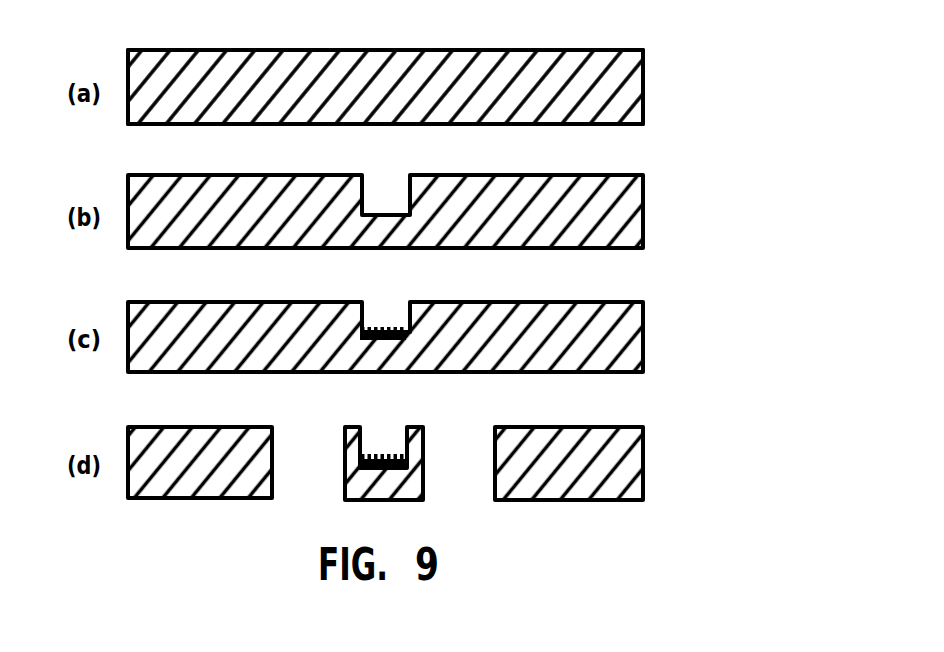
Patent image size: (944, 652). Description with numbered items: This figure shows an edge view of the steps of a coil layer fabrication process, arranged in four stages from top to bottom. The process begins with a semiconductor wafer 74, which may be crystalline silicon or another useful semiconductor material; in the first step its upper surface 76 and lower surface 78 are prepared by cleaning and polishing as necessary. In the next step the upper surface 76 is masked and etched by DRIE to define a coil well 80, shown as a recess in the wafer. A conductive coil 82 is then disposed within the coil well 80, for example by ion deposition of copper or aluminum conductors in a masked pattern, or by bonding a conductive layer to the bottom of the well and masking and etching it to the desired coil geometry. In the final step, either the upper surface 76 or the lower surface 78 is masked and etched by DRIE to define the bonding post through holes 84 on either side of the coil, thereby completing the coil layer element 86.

The semiconductor wafer 74 is at (375, 63).
The upper surface 76 is at (537, 57).
The lower surface 78 is at (523, 124).
The coil well 80 is at (387, 178).
The conductive coil 82 is at (383, 326).
The bonding post through holes 84 is at (307, 437).
The coil layer element 86 is at (698, 463).